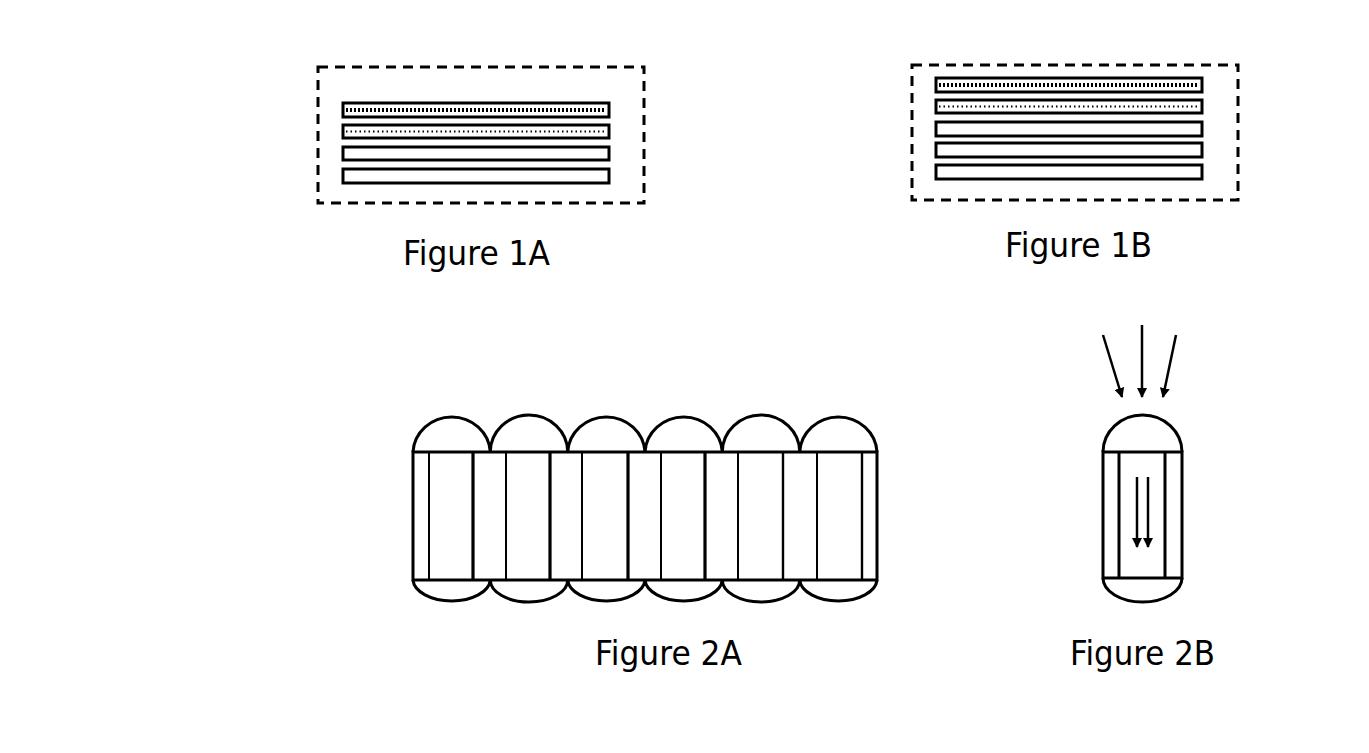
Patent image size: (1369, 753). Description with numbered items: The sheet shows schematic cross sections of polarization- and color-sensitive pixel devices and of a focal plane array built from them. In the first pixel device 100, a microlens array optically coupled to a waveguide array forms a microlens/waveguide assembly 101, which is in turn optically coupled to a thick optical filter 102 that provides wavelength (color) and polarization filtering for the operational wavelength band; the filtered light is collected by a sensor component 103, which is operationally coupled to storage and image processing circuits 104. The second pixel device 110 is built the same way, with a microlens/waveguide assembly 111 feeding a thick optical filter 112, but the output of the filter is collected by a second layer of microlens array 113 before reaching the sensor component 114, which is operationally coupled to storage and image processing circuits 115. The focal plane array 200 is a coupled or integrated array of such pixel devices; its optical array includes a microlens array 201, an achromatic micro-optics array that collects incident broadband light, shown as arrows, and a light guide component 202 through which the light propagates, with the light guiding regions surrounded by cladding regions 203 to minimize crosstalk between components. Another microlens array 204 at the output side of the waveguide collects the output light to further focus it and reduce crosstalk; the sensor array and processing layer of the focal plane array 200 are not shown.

In FIG. 1A, the pixel device 100 is at (457, 66).
In FIG. 1A, the microlens/waveguide assembly 101 is at (609, 107).
In FIG. 1A, the thick optical filter 102 is at (343, 131).
In FIG. 1A, the sensor component 103 is at (343, 153).
In FIG. 1A, the storage and image processing circuits 104 is at (609, 173).
In FIG. 1B, the pixel device 110 is at (1053, 63).
In FIG. 1B, the microlens/waveguide assembly 111 is at (1202, 82).
In FIG. 1B, the thick optical filter 112 is at (936, 107).
In FIG. 1B, the second layer of microlens array 113 is at (1202, 128).
In FIG. 1B, the sensor component 114 is at (936, 150).
In FIG. 1B, the storage and image processing circuits 115 is at (1202, 172).
In FIG. 2A, the focal plane array 200 is at (651, 469).
In FIG. 2A, the microlens array 201 is at (877, 440).
In FIG. 2B, the microlens array 201 is at (1102, 443).
In FIG. 2A, the light guide component 202 is at (839, 531).
In FIG. 2B, the light guide component 202 is at (1137, 557).
In FIG. 2A, the cladding regions 203 is at (421, 494).
In FIG. 2B, the cladding regions 203 is at (1182, 490).
In FIG. 2A, the microlens array 204 is at (877, 590).
In FIG. 2B, the microlens array 204 is at (1110, 595).